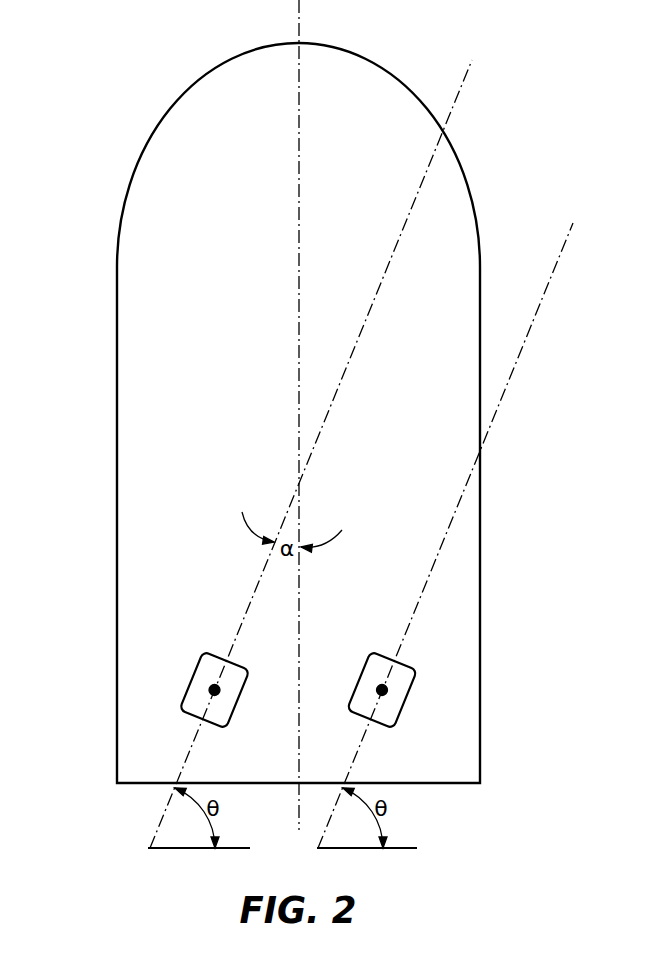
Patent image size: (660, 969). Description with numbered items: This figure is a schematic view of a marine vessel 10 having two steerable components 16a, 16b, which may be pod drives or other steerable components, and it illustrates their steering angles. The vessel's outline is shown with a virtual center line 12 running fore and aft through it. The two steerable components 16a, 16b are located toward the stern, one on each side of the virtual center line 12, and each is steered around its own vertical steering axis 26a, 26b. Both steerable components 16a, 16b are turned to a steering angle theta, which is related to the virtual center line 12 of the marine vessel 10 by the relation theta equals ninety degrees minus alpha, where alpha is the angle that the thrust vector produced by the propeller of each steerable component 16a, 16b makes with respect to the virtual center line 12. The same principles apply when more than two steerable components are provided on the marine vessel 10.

The marine vessel 10 is at (478, 220).
The virtual center line 12 is at (299, 201).
The steerable component 16a is at (183, 697).
The steerable component 16b is at (410, 692).
The vertical steering axis 26a is at (212, 688).
The vertical steering axis 26b is at (378, 688).